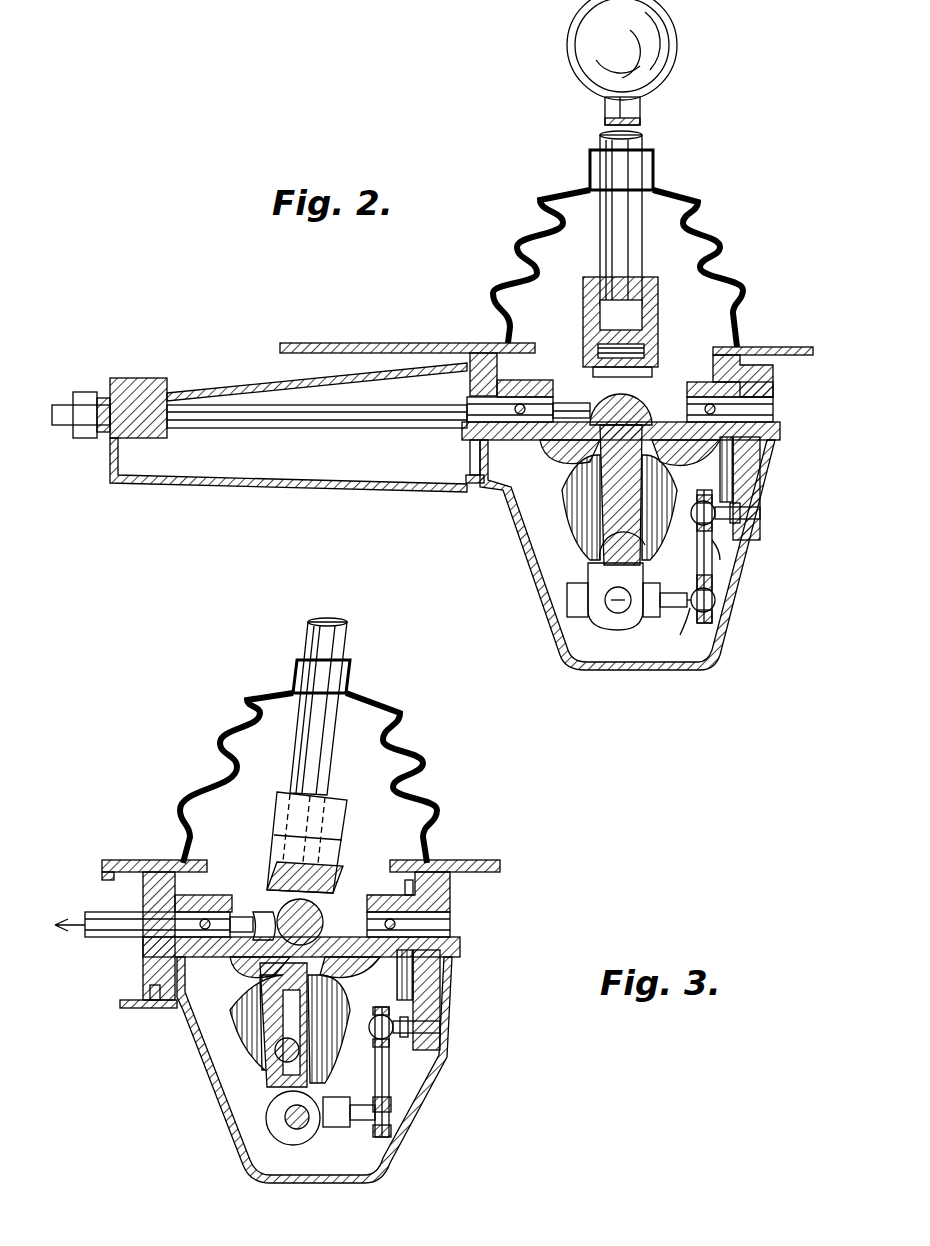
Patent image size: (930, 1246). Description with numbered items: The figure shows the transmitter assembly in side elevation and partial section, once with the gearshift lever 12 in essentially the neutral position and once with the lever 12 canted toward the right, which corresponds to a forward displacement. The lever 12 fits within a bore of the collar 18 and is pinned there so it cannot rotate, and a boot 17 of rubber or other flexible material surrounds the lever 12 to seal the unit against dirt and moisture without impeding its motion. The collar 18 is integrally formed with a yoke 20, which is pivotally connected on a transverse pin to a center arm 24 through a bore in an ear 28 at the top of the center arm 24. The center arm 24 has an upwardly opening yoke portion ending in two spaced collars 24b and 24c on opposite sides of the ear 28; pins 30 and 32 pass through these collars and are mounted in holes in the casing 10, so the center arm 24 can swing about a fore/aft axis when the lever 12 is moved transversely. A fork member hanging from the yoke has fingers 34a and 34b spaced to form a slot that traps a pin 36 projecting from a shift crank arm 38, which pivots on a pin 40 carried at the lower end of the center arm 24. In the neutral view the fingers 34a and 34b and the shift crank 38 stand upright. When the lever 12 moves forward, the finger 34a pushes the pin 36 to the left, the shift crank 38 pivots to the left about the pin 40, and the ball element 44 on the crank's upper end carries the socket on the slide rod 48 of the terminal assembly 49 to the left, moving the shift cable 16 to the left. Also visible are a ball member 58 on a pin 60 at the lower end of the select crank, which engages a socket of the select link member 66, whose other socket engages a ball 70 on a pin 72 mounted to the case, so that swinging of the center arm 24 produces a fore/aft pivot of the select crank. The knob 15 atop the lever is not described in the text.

In FIG. 2, the casing 10 is at (755, 482).
In FIG. 3, the casing 10 is at (440, 1000).
In FIG. 2, the gearshift lever 12 is at (636, 143).
In FIG. 3, the gearshift lever 12 is at (345, 640).
In FIG. 2, the knob 15 is at (655, 48).
In FIG. 2, the shift cable 16 is at (70, 400).
In FIG. 2, the boot 17 is at (728, 285).
In FIG. 3, the boot 17 is at (410, 728).
In FIG. 2, the collar 18 is at (660, 300).
In FIG. 3, the collar 18 is at (300, 808).
In FIG. 2, the yoke 20 is at (654, 372).
In FIG. 2, the center arm 24 is at (568, 448).
In FIG. 2, the collar 24b is at (750, 354).
In FIG. 3, the collar 24b is at (375, 872).
In FIG. 2, the collar 24c is at (548, 378).
In FIG. 3, the collar 24c is at (195, 893).
In FIG. 3, the ear 28 is at (343, 906).
In FIG. 2, the pin 30 is at (760, 410).
In FIG. 3, the pin 30 is at (455, 922).
In FIG. 2, the pin 32 is at (485, 425).
In FIG. 3, the pin 32 is at (145, 938).
In FIG. 2, the fork finger 34a is at (680, 470).
In FIG. 3, the fork finger 34a is at (355, 990).
In FIG. 2, the fork finger 34b is at (585, 510).
In FIG. 3, the fork finger 34b is at (250, 1015).
In FIG. 2, the pin 36 is at (648, 548).
In FIG. 3, the pin 36 is at (272, 1060).
In FIG. 3, the shift crank arm 38 is at (285, 1112).
In FIG. 2, the pin 40 is at (620, 630).
In FIG. 3, the pin 40 is at (300, 1145).
In FIG. 3, the ball element 44 is at (260, 900).
In FIG. 2, the slide rod 48 is at (298, 432).
In FIG. 3, the slide rod 48 is at (103, 918).
In FIG. 2, the terminal assembly 49 is at (167, 392).
In FIG. 2, the ball member 58 is at (715, 600).
In FIG. 2, the pin 60 is at (690, 636).
In FIG. 2, the select link member 66 is at (713, 565).
In FIG. 3, the select link member 66 is at (390, 1080).
In FIG. 2, the ball 70 is at (722, 556).
In FIG. 2, the pin 72 is at (760, 513).
In FIG. 3, the pin 72 is at (440, 1025).